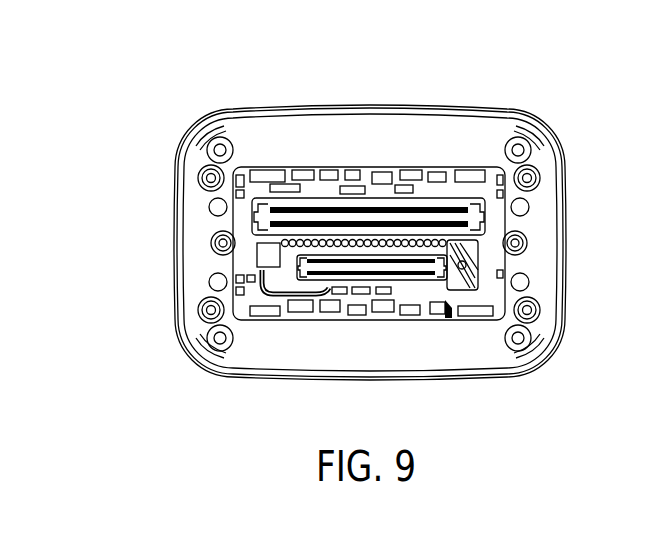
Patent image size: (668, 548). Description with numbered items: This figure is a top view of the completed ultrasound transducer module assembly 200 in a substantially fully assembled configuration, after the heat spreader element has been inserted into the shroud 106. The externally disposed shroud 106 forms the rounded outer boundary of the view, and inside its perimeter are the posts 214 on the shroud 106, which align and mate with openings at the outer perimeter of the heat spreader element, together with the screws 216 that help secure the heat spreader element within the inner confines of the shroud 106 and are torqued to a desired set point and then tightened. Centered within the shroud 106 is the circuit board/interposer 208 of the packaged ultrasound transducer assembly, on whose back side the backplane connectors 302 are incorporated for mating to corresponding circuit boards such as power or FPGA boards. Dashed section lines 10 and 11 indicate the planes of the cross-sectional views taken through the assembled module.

The ultrasound transducer module assembly 200 is at (162, 90).
The shroud 106 is at (303, 108).
The section line 10- 10 is at (371, 85).
The section line 11- 11 is at (117, 243).
The post 214 is at (529, 149).
The screw 216 is at (538, 180).
The circuit board/interposer 208 is at (498, 227).
The backplane connector 302 is at (253, 215).